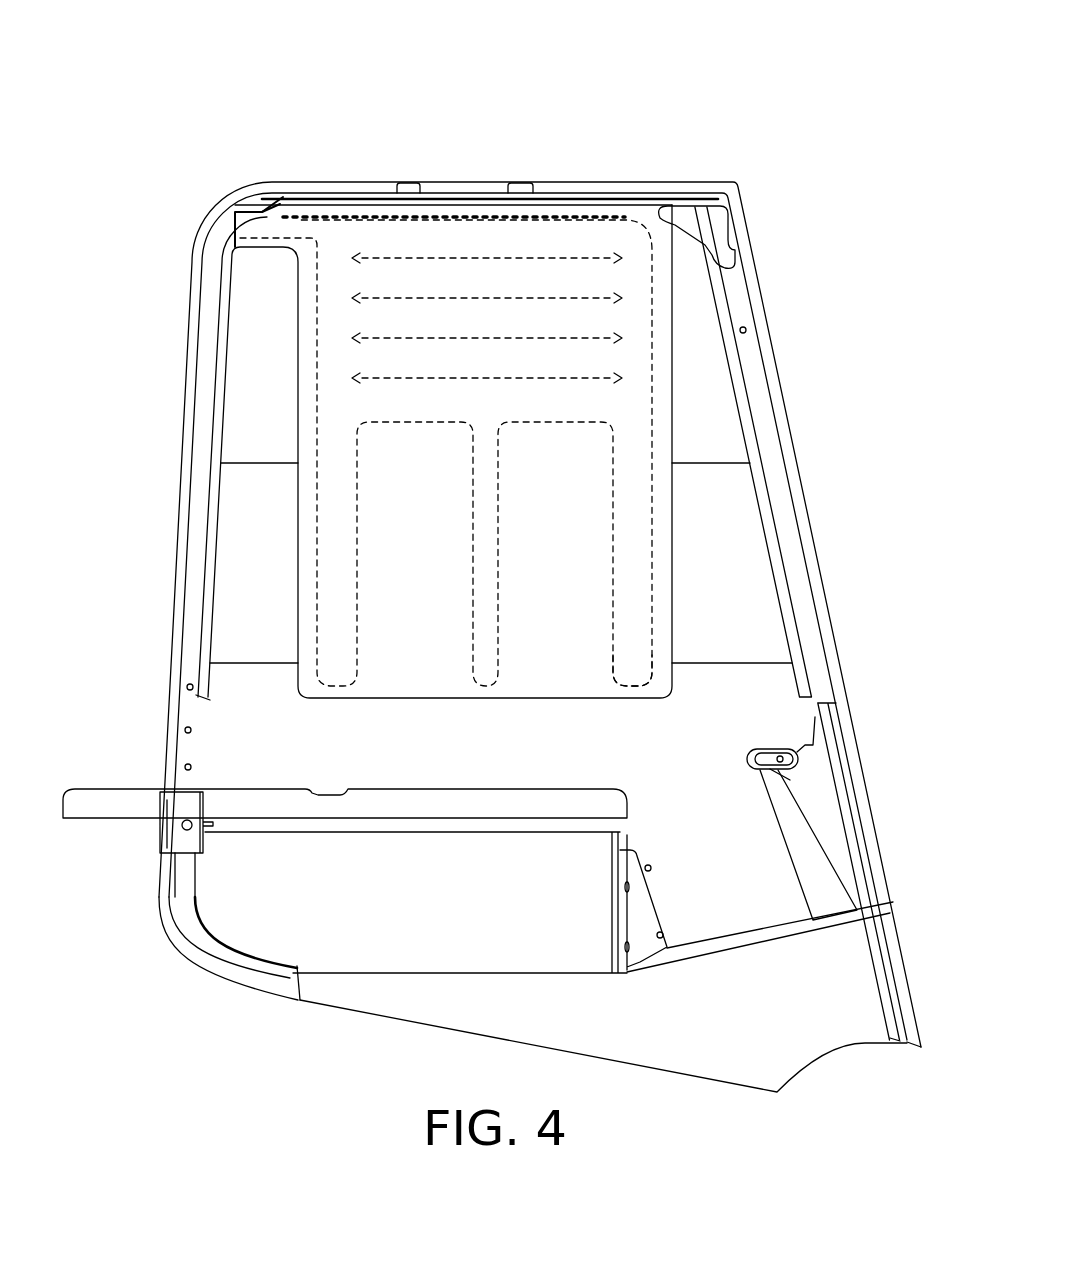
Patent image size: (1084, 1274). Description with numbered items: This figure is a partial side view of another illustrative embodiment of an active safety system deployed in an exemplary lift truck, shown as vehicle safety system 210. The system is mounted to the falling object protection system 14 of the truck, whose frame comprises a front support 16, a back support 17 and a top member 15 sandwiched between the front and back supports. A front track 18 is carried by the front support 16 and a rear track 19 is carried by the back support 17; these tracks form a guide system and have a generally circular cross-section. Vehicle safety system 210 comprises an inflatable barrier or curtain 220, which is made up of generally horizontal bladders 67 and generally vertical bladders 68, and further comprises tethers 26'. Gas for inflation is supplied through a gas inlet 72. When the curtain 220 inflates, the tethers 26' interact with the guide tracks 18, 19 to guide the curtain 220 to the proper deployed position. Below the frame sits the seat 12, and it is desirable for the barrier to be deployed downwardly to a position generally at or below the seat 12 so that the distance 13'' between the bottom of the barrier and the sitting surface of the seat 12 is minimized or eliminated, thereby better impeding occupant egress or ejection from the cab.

The vehicle safety system 210 is at (787, 123).
The falling object protection system (FOPS) 14 is at (523, 564).
The top member 15 is at (374, 187).
The front support 16 is at (770, 340).
The back support 17 is at (190, 422).
The front track 18 is at (773, 553).
The rear track 19 is at (213, 594).
The gas inlet 72 is at (247, 231).
The tethers 26' is at (501, 563).
The inflatable barrier or curtain 220 is at (446, 439).
The horizontal bladders 67 is at (518, 278).
The vertical bladders 68 is at (630, 660).
The seat 12 is at (508, 815).
The distance 13'' is at (469, 744).